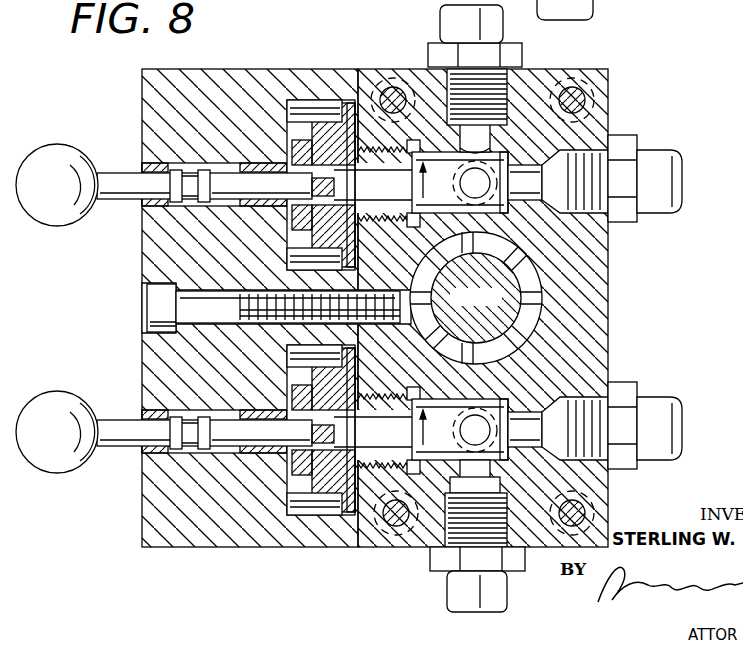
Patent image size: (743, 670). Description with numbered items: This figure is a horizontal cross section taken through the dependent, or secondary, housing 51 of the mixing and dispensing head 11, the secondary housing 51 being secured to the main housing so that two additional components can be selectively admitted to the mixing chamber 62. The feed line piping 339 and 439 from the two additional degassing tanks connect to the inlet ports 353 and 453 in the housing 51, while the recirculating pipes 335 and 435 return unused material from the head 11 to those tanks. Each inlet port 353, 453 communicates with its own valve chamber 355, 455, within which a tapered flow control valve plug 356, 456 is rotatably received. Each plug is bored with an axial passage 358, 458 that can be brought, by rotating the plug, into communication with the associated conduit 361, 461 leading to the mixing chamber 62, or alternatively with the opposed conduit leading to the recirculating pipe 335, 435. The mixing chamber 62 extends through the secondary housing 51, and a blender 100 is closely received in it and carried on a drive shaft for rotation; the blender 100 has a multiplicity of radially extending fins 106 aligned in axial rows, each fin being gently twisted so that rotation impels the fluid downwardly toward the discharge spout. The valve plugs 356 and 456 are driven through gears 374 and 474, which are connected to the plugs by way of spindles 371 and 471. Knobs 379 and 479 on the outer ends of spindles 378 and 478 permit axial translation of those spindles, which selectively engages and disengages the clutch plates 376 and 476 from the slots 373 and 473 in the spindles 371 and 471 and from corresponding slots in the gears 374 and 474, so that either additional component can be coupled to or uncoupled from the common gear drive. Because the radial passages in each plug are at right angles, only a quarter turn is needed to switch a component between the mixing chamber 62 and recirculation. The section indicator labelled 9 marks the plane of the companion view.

The dependent housing 51 is at (600, 300).
The mixing and dispensing head 11 is at (130, 299).
The section line 9 is at (567, 20).
The radially extending fins 106 is at (533, 287).
The blender 100 is at (476, 297).
The mixing chamber 62 is at (537, 308).
The recirculating pipe 335 is at (455, 18).
The recirculating pipe 435 is at (455, 583).
The feed line piping 339 is at (670, 176).
The feed line piping 439 is at (665, 412).
The inlet port 353 is at (540, 172).
The inlet port 453 is at (533, 413).
The valve chamber 355 is at (563, 160).
The valve chamber 455 is at (505, 413).
The valve plug 356 is at (417, 161).
The valve plug 456 is at (425, 410).
The axial passage 358 is at (505, 224).
The axial passage 458 is at (520, 447).
The conduit 361 is at (463, 232).
The conduit 461 is at (455, 379).
The spindle 371 is at (350, 240).
The spindle 471 is at (350, 452).
The slot 373 is at (312, 212).
The slot 473 is at (317, 450).
The gear 374 is at (283, 128).
The gear 474 is at (282, 492).
The clutch plate 376 is at (332, 177).
The clutch plate 476 is at (332, 424).
The spindle 378 is at (221, 177).
The spindle 478 is at (223, 425).
The knob 379 is at (58, 152).
The knob 479 is at (60, 400).